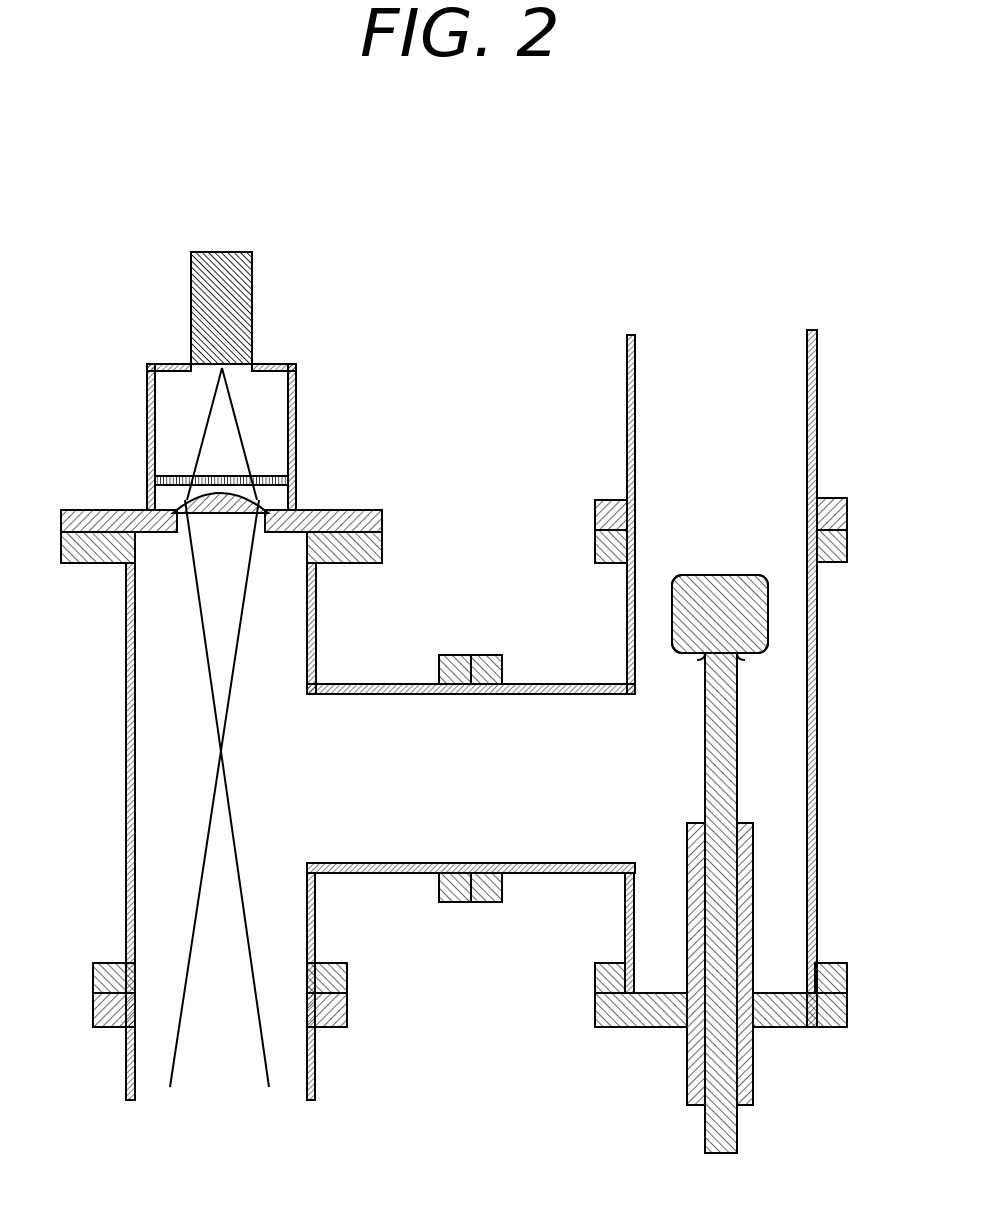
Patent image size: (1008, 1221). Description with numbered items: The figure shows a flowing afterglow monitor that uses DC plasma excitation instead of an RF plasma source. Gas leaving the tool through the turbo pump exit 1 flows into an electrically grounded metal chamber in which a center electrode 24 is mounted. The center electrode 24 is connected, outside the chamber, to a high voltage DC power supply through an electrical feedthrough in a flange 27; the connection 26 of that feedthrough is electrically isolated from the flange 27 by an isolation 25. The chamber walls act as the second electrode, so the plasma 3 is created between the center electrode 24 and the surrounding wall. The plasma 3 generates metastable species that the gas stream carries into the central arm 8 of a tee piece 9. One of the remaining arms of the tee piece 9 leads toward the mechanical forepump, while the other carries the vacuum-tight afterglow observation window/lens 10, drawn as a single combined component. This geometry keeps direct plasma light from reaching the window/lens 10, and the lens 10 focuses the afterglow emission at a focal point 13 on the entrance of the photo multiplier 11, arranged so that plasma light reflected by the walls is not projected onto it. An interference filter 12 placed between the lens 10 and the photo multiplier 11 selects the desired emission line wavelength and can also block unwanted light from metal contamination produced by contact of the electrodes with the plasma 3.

The turbo pump exit 1 is at (697, 347).
The plasma 3 is at (653, 575).
The central arm 8 is at (369, 733).
The tee piece 9 is at (127, 788).
The afterglow observation window/lens 10 is at (262, 503).
The photo multiplier 11 is at (247, 265).
The interference filter 12 is at (177, 475).
The focal point 13 is at (225, 757).
The center electrode 24 is at (709, 642).
The isolation 25 is at (690, 1063).
The connection 26 is at (733, 1143).
The flange 27 is at (610, 1007).